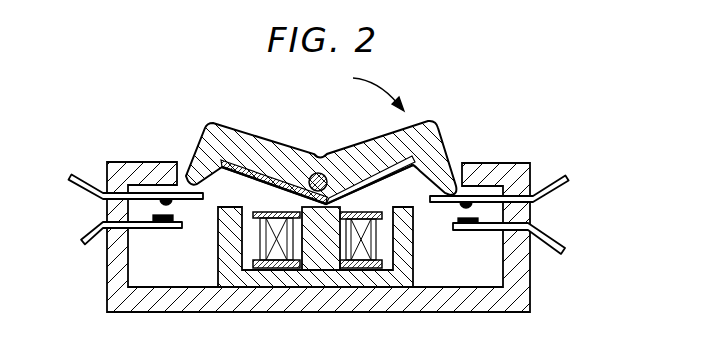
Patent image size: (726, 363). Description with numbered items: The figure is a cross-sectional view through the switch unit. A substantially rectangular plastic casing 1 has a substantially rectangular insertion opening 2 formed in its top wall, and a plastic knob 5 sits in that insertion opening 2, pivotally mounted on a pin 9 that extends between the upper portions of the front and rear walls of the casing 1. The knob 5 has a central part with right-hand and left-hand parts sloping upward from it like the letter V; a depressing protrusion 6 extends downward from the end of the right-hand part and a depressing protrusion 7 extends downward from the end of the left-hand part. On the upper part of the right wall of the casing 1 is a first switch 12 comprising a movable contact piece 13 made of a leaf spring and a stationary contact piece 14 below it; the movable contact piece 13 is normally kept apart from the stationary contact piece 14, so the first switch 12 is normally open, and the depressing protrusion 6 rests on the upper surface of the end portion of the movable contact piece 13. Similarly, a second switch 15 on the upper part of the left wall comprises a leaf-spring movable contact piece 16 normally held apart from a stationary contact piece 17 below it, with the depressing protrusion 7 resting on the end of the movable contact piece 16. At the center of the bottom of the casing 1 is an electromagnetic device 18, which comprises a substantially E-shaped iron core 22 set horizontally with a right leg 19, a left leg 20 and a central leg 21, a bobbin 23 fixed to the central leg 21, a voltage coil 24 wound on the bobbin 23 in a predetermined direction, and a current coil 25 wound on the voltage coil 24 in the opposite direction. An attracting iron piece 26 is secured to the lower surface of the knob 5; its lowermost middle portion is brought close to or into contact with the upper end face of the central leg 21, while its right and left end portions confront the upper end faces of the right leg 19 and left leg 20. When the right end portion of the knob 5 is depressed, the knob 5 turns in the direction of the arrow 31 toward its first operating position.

The casing 1 is at (107, 277).
The insertion opening 2 is at (191, 160).
The knob 5 is at (318, 155).
The depressing protrusion 6 is at (450, 166).
The depressing protrusion 7 is at (193, 122).
The pin 9 is at (325, 176).
The first switch 12 is at (448, 210).
The movable contact piece 13 is at (490, 197).
The stationary contact piece 14 is at (480, 231).
The second switch 15 is at (182, 207).
The movable contact piece 16 is at (138, 162).
The stationary contact piece 17 is at (147, 229).
The electromagnetic device 18 is at (280, 292).
The right leg 19 is at (400, 207).
The left leg 20 is at (230, 207).
The central leg 21 is at (312, 207).
The iron core 22 is at (322, 288).
The bobbin 23 is at (268, 212).
The voltage coil 24 is at (350, 269).
The current coil 25 is at (375, 212).
The iron piece 26 is at (368, 165).
The arrow 31 is at (378, 78).